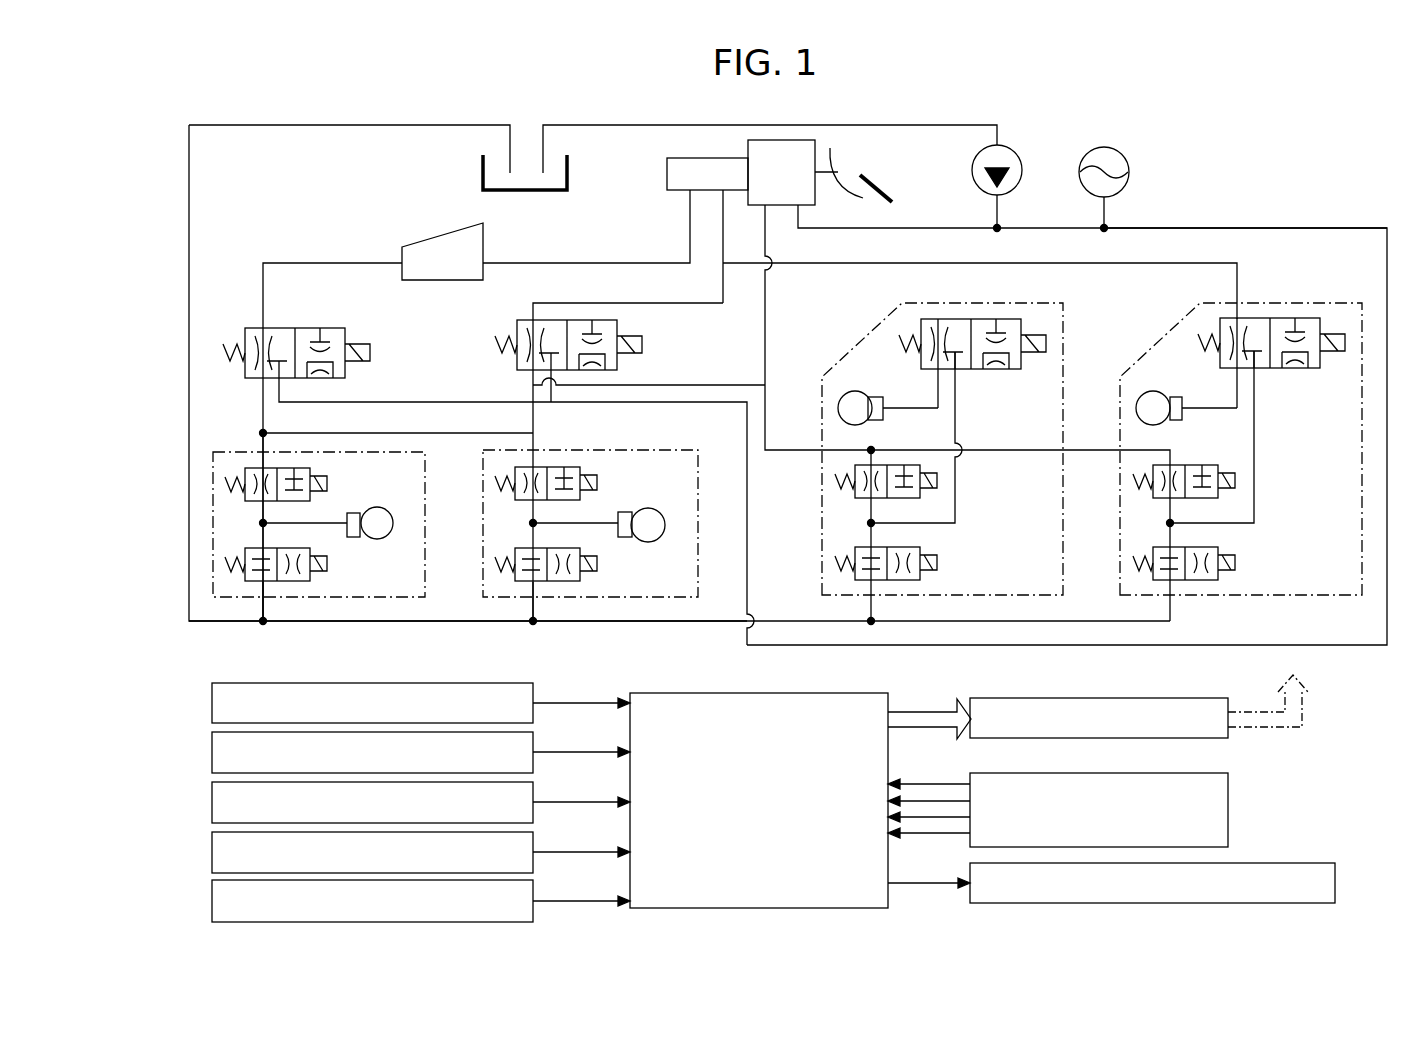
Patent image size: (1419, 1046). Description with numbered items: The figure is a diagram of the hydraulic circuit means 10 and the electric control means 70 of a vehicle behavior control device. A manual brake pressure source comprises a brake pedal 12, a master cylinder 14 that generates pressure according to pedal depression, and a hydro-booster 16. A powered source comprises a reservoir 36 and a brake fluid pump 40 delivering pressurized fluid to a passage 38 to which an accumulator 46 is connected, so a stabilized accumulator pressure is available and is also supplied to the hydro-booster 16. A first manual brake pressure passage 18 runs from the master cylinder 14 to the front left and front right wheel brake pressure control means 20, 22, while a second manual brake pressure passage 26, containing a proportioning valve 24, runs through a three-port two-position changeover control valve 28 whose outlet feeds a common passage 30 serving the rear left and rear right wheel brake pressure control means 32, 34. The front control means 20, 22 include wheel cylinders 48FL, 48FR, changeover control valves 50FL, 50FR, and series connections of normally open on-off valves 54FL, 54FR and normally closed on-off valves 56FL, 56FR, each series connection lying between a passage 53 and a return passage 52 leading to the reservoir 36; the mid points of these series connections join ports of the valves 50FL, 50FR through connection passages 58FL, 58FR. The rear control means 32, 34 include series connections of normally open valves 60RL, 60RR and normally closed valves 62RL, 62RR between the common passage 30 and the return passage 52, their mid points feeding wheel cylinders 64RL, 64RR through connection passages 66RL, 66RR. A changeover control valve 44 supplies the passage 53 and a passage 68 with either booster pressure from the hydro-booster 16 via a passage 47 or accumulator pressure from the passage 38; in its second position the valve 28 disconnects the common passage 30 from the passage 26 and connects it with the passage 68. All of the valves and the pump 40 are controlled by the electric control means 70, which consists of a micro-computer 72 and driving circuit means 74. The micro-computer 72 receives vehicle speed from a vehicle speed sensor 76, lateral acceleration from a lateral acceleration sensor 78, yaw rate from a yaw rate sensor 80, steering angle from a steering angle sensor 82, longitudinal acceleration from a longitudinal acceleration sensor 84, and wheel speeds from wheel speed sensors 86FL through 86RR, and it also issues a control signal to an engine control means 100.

The hydraulic circuit means 10 is at (178, 187).
The brake pedal 12 is at (866, 182).
The master cylinder 14 is at (667, 161).
The hydro-booster 16 is at (781, 172).
The first manual brake pressure passage 18 is at (790, 263).
The front left wheel brake pressure control means 20 is at (943, 449).
The front right wheel brake pressure control means 22 is at (1241, 436).
The proportioning valve 24 is at (410, 249).
The second manual brake pressure passage 26 is at (288, 263).
The 3-ports-2-positions changeover type electromagnetic control valve 28 is at (290, 328).
The common passage 30 is at (263, 420).
The rear left wheel brake pressure control means 32 is at (272, 526).
The rear right wheel brake pressure control means 34 is at (564, 519).
The reservoir 36 is at (483, 174).
The passage 38 is at (1268, 228).
The brake fluid pump 40 is at (1019, 165).
The 3-ports-2-positions changeover type electronic control valve 44 is at (578, 320).
The accumulator 46 is at (1130, 172).
The passage 47 is at (679, 303).
The wheel cylinder 48FL is at (866, 423).
The wheel cylinder 48FR is at (1165, 423).
The 3-ports-2-positions changeover type electromagnetic control valve 50FL is at (987, 320).
The 3-ports-2-positions changeover type electromagnetic control valve 50FR is at (1270, 318).
The return passage 52 is at (790, 621).
The passage 53 is at (745, 385).
The normally open type electromagnetic on-off valve 54FL is at (925, 498).
The normally open type electromagnetic on-off valve 54FR is at (1222, 498).
The normally closed type electromagnetic on-off valve 56FL is at (932, 547).
The normally closed type electromagnetic on-off valve 56FR is at (1230, 547).
The connection passage 58FL is at (957, 395).
The connection passage 58FR is at (1256, 395).
The normally open type electromagnetic on-off valve 60RL is at (255, 500).
The normally open type electromagnetic on-off valve 60RR is at (560, 467).
The normally closed type electromagnetic on-off valve 62RL is at (253, 582).
The normally closed type electromagnetic on-off valve 62RR is at (525, 582).
The wheel cylinder 64RL is at (377, 540).
The wheel cylinder 64RR is at (648, 542).
The connection passage 66RL is at (340, 523).
The connection passage 66RR is at (609, 520).
The passage 68 is at (410, 402).
The electric control means 70 is at (783, 798).
The micro-computer 72 is at (759, 800).
The driving circuit means 74 is at (1170, 738).
The vehicle speed sensor 76 is at (212, 707).
The lateral acceleration sensor 78 is at (212, 756).
The yaw rate sensor 80 is at (212, 805).
The steering angle sensor 82 is at (212, 855).
The longitudinal acceleration sensor 84 is at (212, 904).
The wheel speed sensor 86FL is at (1148, 797).
The wheel speed sensor 86RR is at (1228, 805).
The engine control means 100 is at (1335, 882).